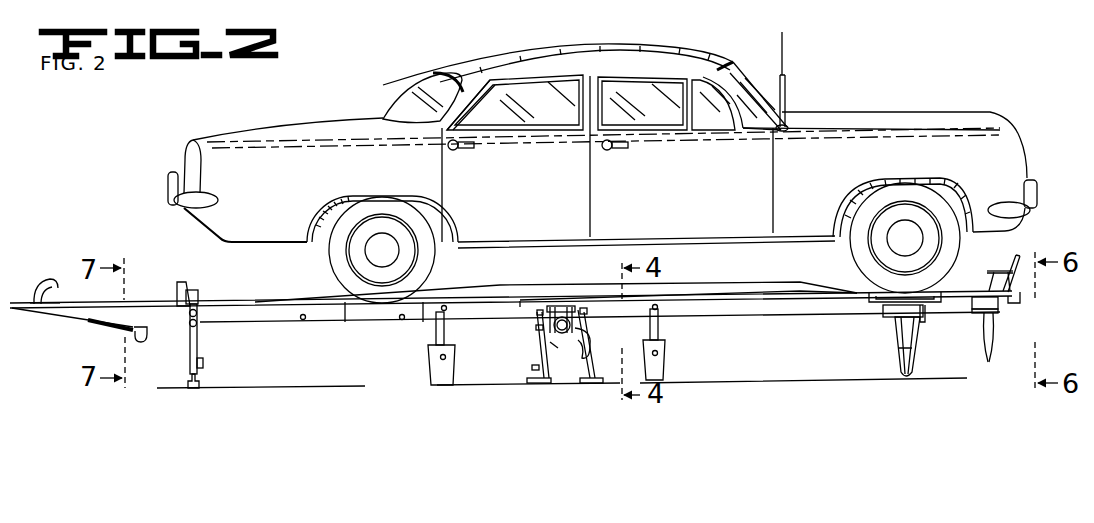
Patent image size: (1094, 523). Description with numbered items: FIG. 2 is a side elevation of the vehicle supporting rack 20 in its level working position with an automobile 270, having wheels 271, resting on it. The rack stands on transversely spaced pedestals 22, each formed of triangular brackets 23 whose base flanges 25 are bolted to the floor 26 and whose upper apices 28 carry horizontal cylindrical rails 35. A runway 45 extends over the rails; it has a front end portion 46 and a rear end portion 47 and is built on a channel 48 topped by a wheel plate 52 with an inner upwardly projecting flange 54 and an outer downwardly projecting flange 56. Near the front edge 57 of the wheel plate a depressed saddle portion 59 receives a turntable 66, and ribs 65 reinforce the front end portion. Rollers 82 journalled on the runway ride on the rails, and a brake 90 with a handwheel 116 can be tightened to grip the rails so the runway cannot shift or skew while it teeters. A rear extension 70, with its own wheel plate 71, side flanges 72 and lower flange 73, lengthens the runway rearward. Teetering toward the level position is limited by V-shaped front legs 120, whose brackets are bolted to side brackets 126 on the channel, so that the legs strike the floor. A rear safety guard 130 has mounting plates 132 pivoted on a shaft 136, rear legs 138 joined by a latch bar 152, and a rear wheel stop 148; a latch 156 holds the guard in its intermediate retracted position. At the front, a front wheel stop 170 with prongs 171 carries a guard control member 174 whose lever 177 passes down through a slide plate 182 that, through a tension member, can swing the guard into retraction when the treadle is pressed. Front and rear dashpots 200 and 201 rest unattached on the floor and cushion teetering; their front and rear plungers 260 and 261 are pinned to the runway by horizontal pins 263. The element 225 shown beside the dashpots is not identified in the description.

The vehicle supporting rack 20 is at (222, 271).
The automobile 270 is at (418, 86).
The wheels 271 is at (428, 230).
The runways 45 is at (735, 287).
The side flanges 72 is at (273, 319).
The channel 48 is at (782, 313).
The floor 26 is at (334, 386).
The inner upwardly projecting flange 54 is at (663, 284).
The outer downwardly projecting flange 56 is at (350, 306).
The horizontal pins 263 is at (447, 307).
The rear extension 70 is at (56, 298).
The rear end portion 47 is at (49, 298).
The wheel plate 71 is at (41, 302).
The lower flange 73 is at (95, 322).
The latch 156 is at (140, 334).
The mounting plates 132 is at (192, 288).
The rear wheel stop 148 is at (184, 290).
The rear safety guards 130 is at (184, 335).
The rear legs 138 is at (190, 362).
The shaft 136 is at (197, 322).
The latch bar 152 is at (204, 364).
The rear plunger 261 is at (436, 335).
The rear dashpot 201 is at (433, 375).
The bolt 225 is at (430, 359).
The wheel plate 52 is at (515, 302).
The rollers 82 is at (563, 318).
The brake 90 is at (597, 327).
The handwheel 116 is at (588, 338).
The cylindrical rails 35 is at (536, 328).
The upper apices 28 is at (554, 340).
The pedestals 22 is at (532, 368).
The base flanges 25 is at (550, 383).
The triangular brackets 23 is at (568, 375).
The front plunger 260 is at (660, 327).
The front dashpot 200 is at (668, 371).
The depressed saddle portion 59 is at (882, 305).
The turntables 66 is at (884, 291).
The side brackets 126 is at (925, 322).
The V-shaped front legs 120 is at (898, 358).
The front edge 57 is at (990, 310).
The ribs 65 is at (983, 317).
The slide plate 182 is at (989, 330).
The lever 177 is at (990, 350).
The front wheel stop 170 is at (1018, 256).
The guard control member 174 is at (988, 268).
The front end portion 46 is at (997, 288).
The prongs 171 is at (1022, 290).